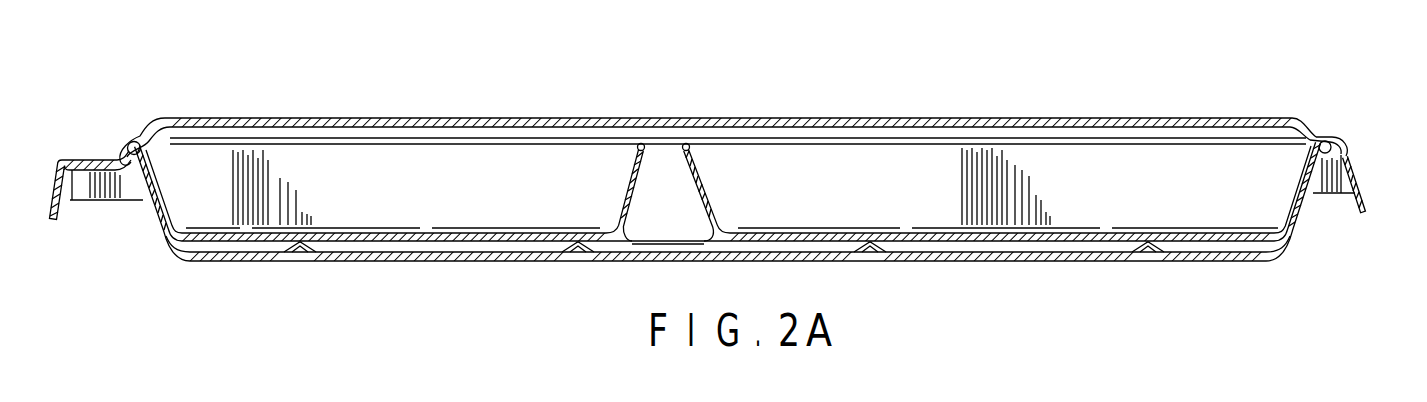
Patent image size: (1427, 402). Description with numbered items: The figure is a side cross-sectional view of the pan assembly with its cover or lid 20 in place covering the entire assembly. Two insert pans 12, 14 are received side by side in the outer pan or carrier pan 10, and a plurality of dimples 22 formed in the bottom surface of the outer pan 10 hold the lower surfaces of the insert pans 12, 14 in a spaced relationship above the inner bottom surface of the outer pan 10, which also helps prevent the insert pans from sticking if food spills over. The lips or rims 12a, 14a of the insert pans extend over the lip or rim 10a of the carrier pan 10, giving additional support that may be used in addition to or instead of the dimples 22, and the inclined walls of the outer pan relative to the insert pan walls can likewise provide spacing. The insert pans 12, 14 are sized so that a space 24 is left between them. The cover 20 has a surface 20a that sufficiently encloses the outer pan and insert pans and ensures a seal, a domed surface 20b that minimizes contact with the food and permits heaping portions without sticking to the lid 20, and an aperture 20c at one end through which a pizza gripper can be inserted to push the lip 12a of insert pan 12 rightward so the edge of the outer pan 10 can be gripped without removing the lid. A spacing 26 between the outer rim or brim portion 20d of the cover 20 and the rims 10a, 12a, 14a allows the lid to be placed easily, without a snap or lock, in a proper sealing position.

The outer pan 10 is at (1294, 256).
The lip or rim of the carrier pan 10a is at (133, 176).
The insert pan 12 is at (626, 197).
The lip of the insert pan 12a is at (140, 140).
The insert pan 14 is at (709, 200).
The rim of the insert pan 14a is at (1337, 140).
The cover or lid 20 is at (1033, 117).
The surface of the cover 20a is at (1320, 136).
The domed surface 20b is at (1305, 115).
The aperture 20c is at (104, 143).
The outer rim or brim portion of the cover 20d is at (1347, 152).
The dimples 22 is at (298, 263).
The space between the pans 24 is at (653, 152).
The spacing 26 is at (1337, 170).